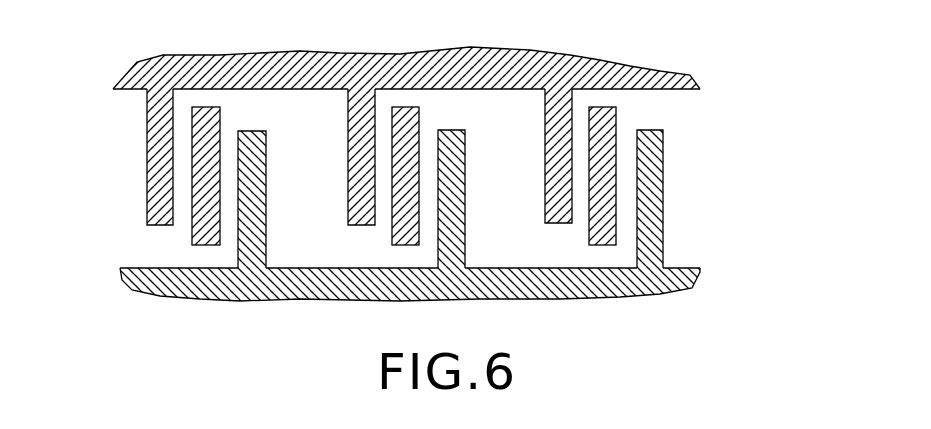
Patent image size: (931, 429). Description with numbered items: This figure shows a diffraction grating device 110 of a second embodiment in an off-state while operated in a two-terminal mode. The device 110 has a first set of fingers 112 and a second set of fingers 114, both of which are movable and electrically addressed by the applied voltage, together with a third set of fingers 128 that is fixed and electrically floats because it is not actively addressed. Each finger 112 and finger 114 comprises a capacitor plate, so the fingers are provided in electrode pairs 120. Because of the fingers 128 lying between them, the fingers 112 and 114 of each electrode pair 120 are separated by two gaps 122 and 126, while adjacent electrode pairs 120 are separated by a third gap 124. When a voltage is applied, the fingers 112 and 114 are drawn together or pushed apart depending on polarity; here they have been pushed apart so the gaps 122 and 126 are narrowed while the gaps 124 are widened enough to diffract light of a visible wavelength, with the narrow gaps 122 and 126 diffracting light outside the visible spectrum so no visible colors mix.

The diffraction grating device 110 is at (116, 208).
The fingers 112 is at (257, 232).
The fingers 114 is at (153, 150).
The electrode pair 120 is at (246, 91).
The gap 122 is at (185, 202).
The gap 124 is at (329, 188).
The gap 126 is at (232, 228).
The third set of fingers 128 is at (205, 107).